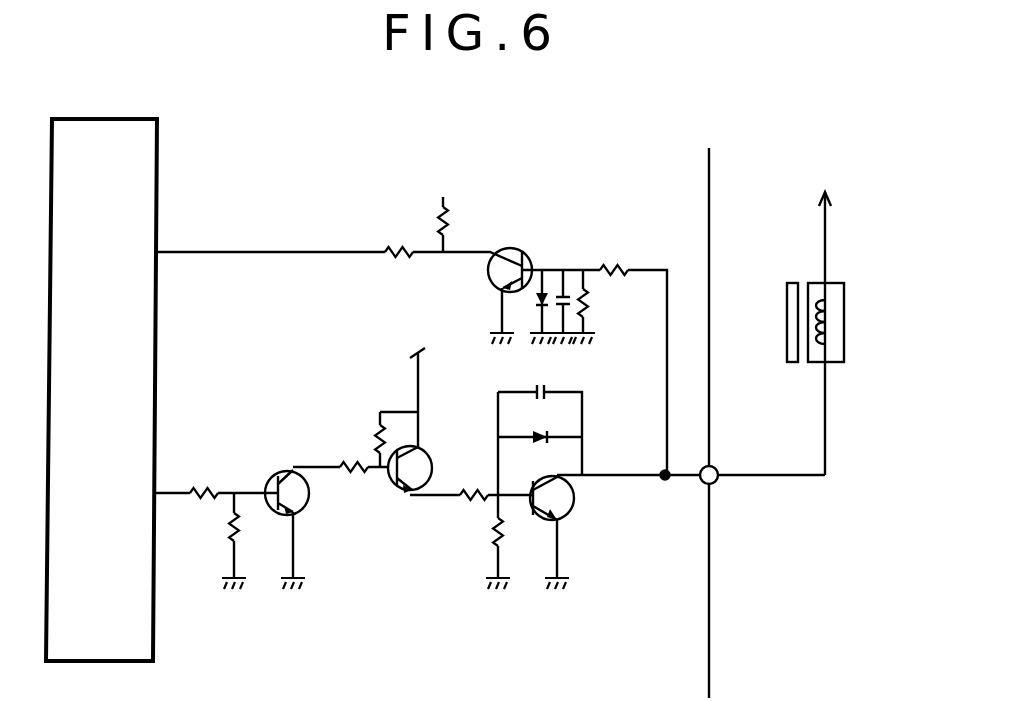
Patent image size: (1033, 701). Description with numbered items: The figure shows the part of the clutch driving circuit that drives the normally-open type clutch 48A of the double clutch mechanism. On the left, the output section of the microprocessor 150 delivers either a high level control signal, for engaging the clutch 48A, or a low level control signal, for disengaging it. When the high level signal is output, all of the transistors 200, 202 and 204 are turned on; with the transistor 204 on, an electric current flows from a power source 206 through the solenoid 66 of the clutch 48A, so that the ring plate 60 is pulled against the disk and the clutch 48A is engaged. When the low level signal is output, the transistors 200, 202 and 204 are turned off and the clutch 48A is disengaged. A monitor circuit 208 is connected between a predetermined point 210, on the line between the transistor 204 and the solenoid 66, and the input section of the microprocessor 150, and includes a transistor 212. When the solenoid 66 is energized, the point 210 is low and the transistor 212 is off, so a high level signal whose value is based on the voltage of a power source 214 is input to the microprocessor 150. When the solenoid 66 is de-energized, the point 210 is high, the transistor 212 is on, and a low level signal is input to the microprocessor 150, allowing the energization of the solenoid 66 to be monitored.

The microprocessor 150 is at (157, 172).
The power source 214 is at (435, 198).
The monitor circuit 208 is at (577, 309).
The transistor 212 is at (532, 256).
The transistor 200 is at (285, 475).
The transistor 202 is at (412, 495).
The transistor 204 is at (575, 508).
The predetermined point 210 is at (667, 478).
The normally-open type clutch 48A is at (807, 333).
The ring plate 60 is at (787, 300).
The solenoid 66 is at (844, 300).
The power source 206 is at (827, 196).